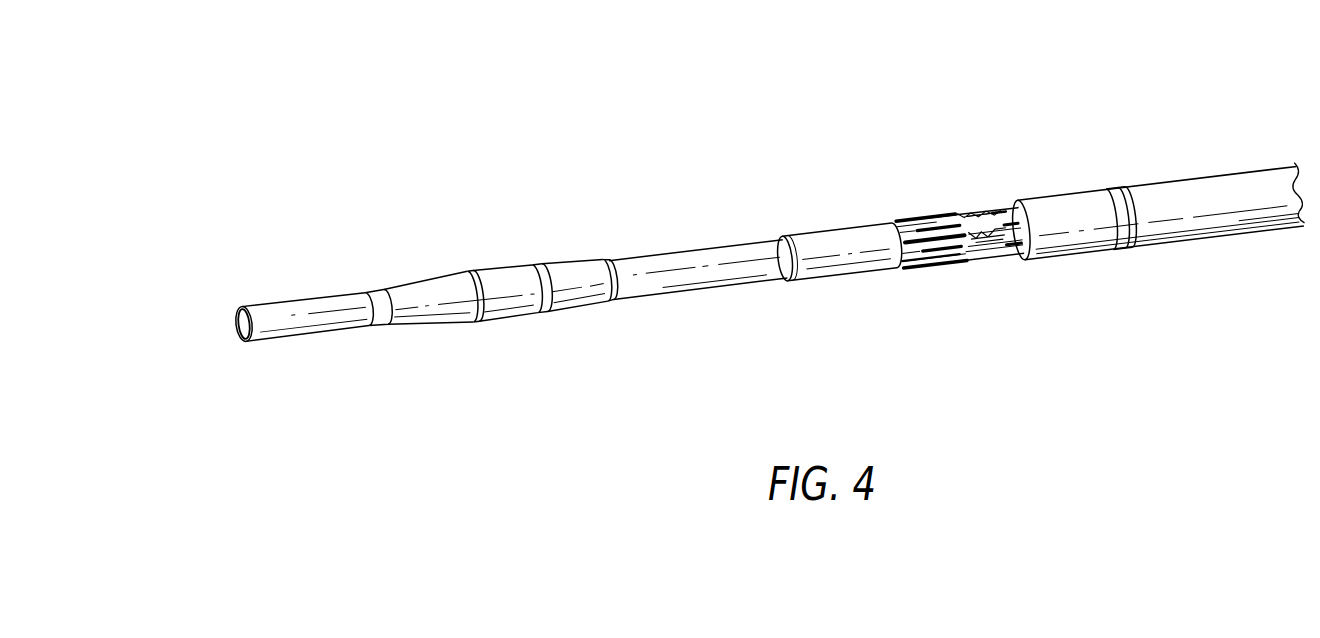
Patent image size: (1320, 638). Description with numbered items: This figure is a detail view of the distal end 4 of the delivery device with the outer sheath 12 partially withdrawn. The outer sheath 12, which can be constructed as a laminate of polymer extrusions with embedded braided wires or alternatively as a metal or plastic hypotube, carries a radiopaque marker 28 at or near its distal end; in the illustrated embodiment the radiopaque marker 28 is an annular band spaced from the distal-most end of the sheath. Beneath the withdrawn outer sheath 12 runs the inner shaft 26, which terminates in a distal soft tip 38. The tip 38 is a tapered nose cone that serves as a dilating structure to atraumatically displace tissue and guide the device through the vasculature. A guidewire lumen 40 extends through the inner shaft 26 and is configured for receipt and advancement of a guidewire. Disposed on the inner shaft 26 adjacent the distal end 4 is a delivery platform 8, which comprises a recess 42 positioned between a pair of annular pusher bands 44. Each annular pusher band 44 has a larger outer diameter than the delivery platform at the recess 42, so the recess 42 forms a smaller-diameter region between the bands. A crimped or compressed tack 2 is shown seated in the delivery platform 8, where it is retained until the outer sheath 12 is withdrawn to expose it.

The tack 2 is at (984, 251).
The distal end 4 is at (470, 115).
The delivery platform 8 is at (899, 211).
The outer sheath 12 is at (1212, 183).
The inner shaft 26 is at (722, 286).
The radiopaque marker 28 is at (1116, 193).
The distal soft tip 38 is at (320, 297).
The guidewire lumen 40 is at (236, 326).
The recess 42 is at (900, 270).
The annular pusher band 44 is at (827, 233).